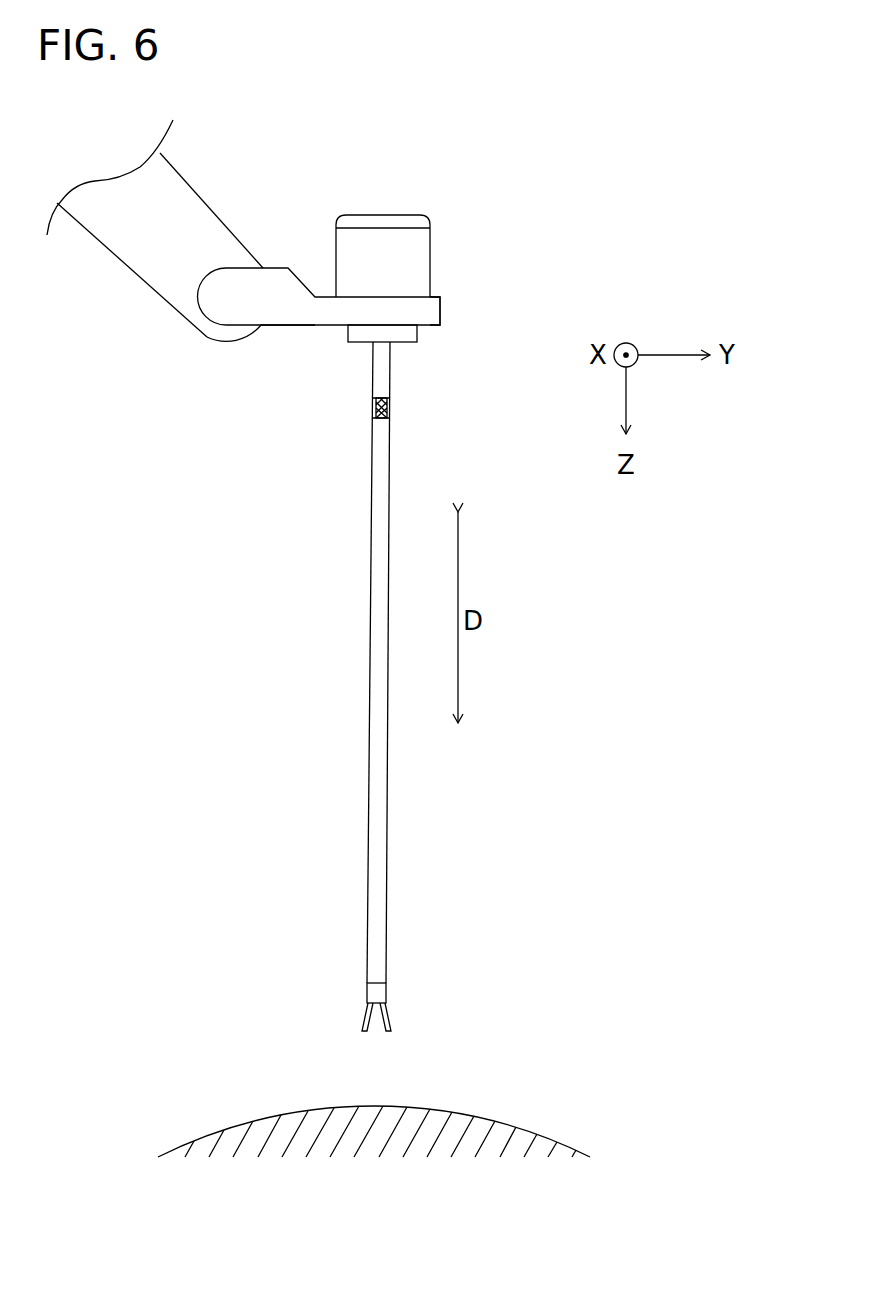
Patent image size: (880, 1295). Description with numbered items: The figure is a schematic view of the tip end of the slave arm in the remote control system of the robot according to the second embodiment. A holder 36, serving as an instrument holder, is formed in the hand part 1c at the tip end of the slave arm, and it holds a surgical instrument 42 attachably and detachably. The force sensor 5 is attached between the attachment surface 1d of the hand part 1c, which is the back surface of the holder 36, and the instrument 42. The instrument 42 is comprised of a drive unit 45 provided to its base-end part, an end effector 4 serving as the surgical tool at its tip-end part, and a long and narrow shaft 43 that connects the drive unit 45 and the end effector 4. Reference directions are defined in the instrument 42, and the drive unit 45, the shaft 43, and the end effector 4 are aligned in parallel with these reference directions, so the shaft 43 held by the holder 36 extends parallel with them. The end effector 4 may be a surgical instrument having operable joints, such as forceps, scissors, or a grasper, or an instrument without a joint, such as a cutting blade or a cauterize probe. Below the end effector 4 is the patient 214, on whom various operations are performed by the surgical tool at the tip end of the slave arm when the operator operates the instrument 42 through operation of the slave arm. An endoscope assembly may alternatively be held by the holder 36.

The hand part 1c is at (277, 282).
The attachment surface 1d is at (312, 327).
The drive unit 45 is at (388, 237).
The holder 36 is at (437, 303).
The force sensor 5 is at (405, 348).
The instrument 42 is at (365, 686).
The shaft 43 is at (395, 450).
The end effector 4 is at (387, 990).
The patient 214 is at (527, 1133).